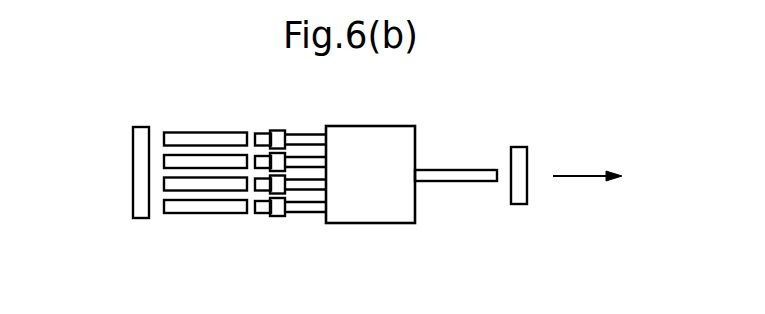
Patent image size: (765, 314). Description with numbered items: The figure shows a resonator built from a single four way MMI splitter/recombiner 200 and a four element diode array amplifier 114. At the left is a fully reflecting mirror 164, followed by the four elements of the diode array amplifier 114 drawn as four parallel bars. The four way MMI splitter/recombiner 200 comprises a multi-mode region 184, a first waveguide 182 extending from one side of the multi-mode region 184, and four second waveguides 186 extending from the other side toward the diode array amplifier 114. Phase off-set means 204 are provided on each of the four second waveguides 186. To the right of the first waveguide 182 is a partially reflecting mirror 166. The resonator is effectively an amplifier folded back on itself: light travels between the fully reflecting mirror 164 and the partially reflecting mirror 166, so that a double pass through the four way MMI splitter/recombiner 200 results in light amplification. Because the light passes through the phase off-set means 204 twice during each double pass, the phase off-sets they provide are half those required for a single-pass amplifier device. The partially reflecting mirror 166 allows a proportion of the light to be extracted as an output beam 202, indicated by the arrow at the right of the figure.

The fully reflecting mirror 164 is at (140, 145).
The four element diode array amplifier 114 is at (164, 223).
The phase off-set means 204 is at (277, 130).
The second waveguides 186 is at (302, 208).
The multi-mode region 184 is at (370, 135).
The first waveguide 182 is at (435, 172).
The partially reflecting mirror 166 is at (518, 152).
The output beam 202 is at (583, 177).
The four way MMI splitter/recombiner 200 is at (502, 249).